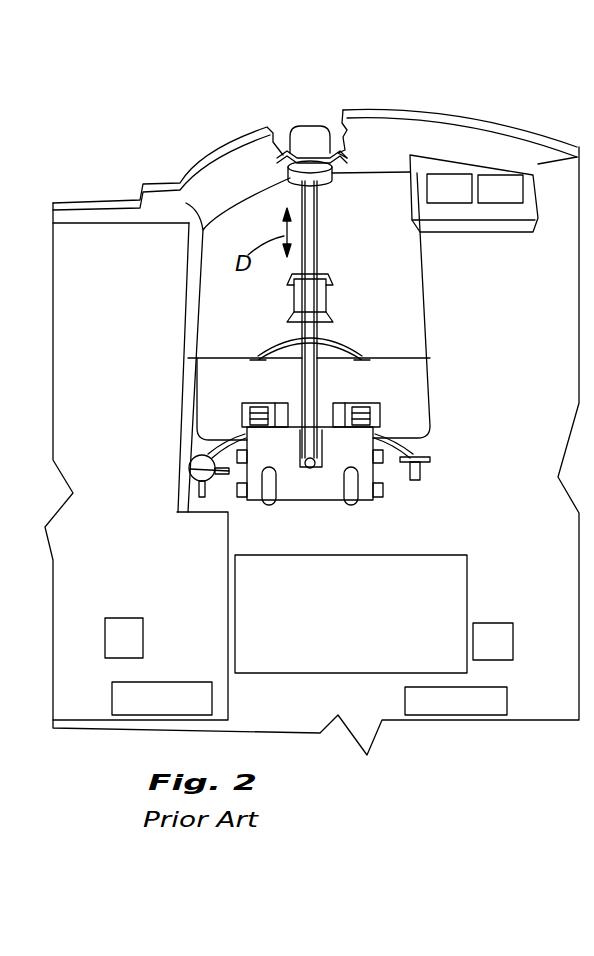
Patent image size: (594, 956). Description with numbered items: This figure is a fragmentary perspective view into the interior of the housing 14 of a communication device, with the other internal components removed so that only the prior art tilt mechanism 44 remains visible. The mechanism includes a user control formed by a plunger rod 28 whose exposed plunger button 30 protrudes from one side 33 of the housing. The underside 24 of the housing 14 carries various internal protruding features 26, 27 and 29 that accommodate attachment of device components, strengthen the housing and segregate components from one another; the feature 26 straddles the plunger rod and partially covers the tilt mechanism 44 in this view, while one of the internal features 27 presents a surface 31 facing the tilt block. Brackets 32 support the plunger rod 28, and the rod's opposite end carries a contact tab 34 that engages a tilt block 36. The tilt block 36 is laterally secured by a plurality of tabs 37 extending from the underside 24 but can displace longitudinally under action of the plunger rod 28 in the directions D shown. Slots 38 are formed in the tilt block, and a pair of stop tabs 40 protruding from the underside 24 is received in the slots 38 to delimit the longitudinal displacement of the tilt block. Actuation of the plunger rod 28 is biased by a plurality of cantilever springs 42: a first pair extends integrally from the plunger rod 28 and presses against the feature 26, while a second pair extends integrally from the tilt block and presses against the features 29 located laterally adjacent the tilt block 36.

The housing 14 is at (537, 110).
The underside of the housing 24 is at (243, 217).
The internal protruding feature 26 is at (207, 376).
The internal protruding feature 27 is at (495, 587).
The plunger rod 28 is at (313, 228).
The internal protruding feature 29 is at (198, 466).
The plunger button 30 is at (310, 137).
The surface 31 is at (410, 552).
The brackets 32 is at (327, 313).
The side of the housing 33 is at (450, 108).
The contact tab 34 is at (311, 468).
The tilt block 36 is at (295, 488).
The tabs 37 is at (242, 468).
The slots 38 is at (270, 465).
The stop tabs 40 is at (270, 502).
The cantilever springs 42 is at (280, 345).
The tilt mechanism 44 is at (385, 390).